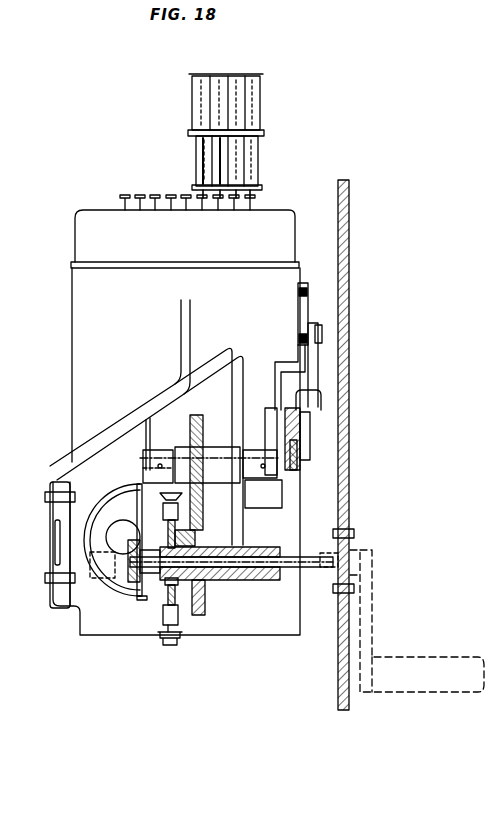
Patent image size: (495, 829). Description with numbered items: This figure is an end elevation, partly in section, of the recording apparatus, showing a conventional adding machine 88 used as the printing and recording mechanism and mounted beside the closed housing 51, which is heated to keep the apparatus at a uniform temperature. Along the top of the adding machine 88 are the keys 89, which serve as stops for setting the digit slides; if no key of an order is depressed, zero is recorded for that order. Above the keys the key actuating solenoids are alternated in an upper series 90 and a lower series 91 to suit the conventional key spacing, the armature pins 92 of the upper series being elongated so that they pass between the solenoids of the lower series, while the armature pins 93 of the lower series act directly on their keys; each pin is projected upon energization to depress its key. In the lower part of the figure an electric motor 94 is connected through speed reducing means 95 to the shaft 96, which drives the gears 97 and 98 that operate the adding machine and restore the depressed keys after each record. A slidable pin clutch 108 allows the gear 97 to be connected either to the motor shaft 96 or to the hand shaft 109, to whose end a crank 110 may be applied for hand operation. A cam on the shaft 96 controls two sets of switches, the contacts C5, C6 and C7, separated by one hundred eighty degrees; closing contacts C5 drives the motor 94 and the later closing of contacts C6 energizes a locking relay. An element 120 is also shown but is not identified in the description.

The closed housing 51 is at (350, 258).
The adding machine 88 is at (85, 238).
The keys 89 is at (258, 203).
The upper series solenoids 90 is at (262, 103).
The lower series solenoids 91 is at (260, 150).
The armature pins 92 is at (203, 162).
The armature pins 93 is at (253, 196).
The electric motor 94 is at (82, 540).
The speed reducing means 95 is at (147, 597).
The shaft 96 is at (145, 555).
The gear 97 is at (205, 596).
The gear 98 is at (200, 415).
The slidable pin clutch 108 is at (212, 533).
The hand shaft 109 is at (265, 566).
The crank 110 is at (368, 610).
The control rod 120 is at (168, 597).
The contacts C-5 C5 is at (180, 618).
The contacts C-6 C6 is at (166, 642).
The contacts C-7 C7 is at (163, 497).